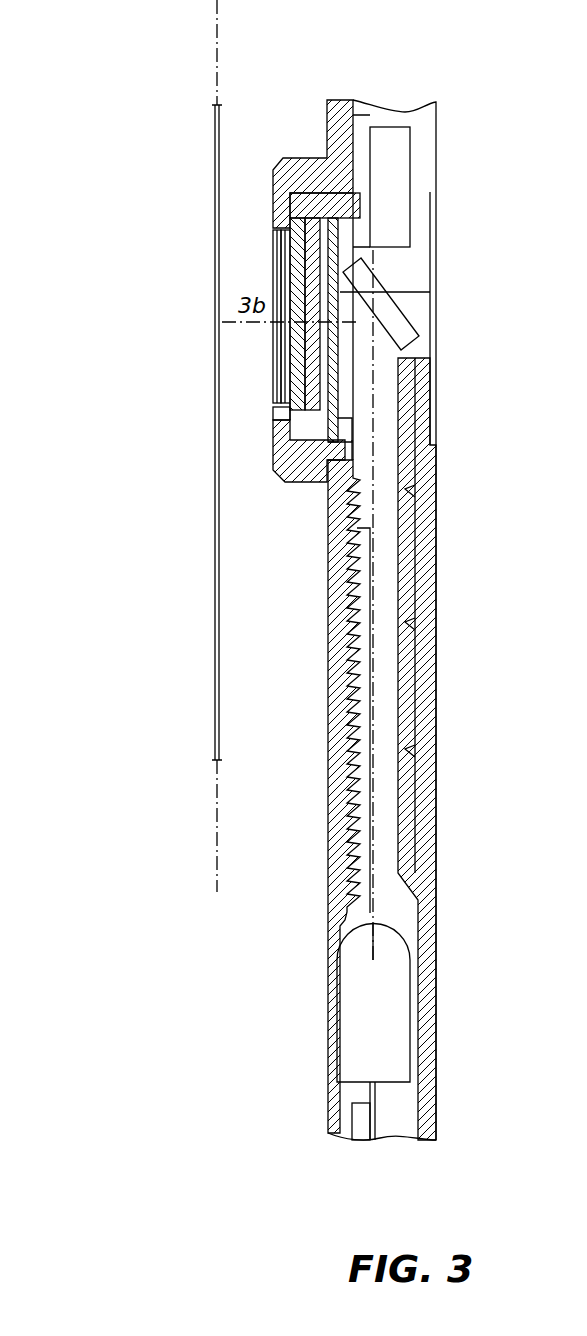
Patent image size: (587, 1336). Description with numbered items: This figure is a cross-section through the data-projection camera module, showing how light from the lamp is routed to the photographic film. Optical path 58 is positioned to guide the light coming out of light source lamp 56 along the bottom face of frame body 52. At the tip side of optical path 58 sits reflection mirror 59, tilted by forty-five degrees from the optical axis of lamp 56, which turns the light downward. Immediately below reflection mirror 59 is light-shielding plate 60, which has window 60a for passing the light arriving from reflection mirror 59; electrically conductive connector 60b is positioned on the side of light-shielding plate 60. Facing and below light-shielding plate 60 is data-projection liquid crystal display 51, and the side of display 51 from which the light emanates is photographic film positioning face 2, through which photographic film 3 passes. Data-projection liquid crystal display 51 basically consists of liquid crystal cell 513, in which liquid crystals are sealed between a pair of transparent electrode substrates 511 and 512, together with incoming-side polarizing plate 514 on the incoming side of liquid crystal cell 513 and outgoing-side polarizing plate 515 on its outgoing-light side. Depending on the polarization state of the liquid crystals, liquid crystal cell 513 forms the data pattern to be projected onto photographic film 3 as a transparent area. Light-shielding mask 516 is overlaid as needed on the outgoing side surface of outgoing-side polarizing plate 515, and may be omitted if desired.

The photographic film positioning face 2 is at (216, 800).
The photographic film 3 is at (215, 428).
The data-projection liquid crystal display 51 is at (161, 316).
The transparent electrode substrate 511 is at (295, 250).
The transparent electrode substrate 512 is at (300, 285).
The liquid crystal cell 513 is at (180, 298).
The incoming-side polarizing plate 514 is at (292, 206).
The outgoing-side polarizing plate 515 is at (283, 262).
The light-shielding mask 516 is at (290, 343).
The frame body 52 is at (340, 905).
The light source lamp 56 is at (410, 1008).
The optical path 58 is at (372, 595).
The reflection mirror 59 is at (405, 320).
The light-shielding plate 60 is at (317, 487).
The window 60a is at (330, 337).
The electrically conductive connector 60b is at (325, 195).